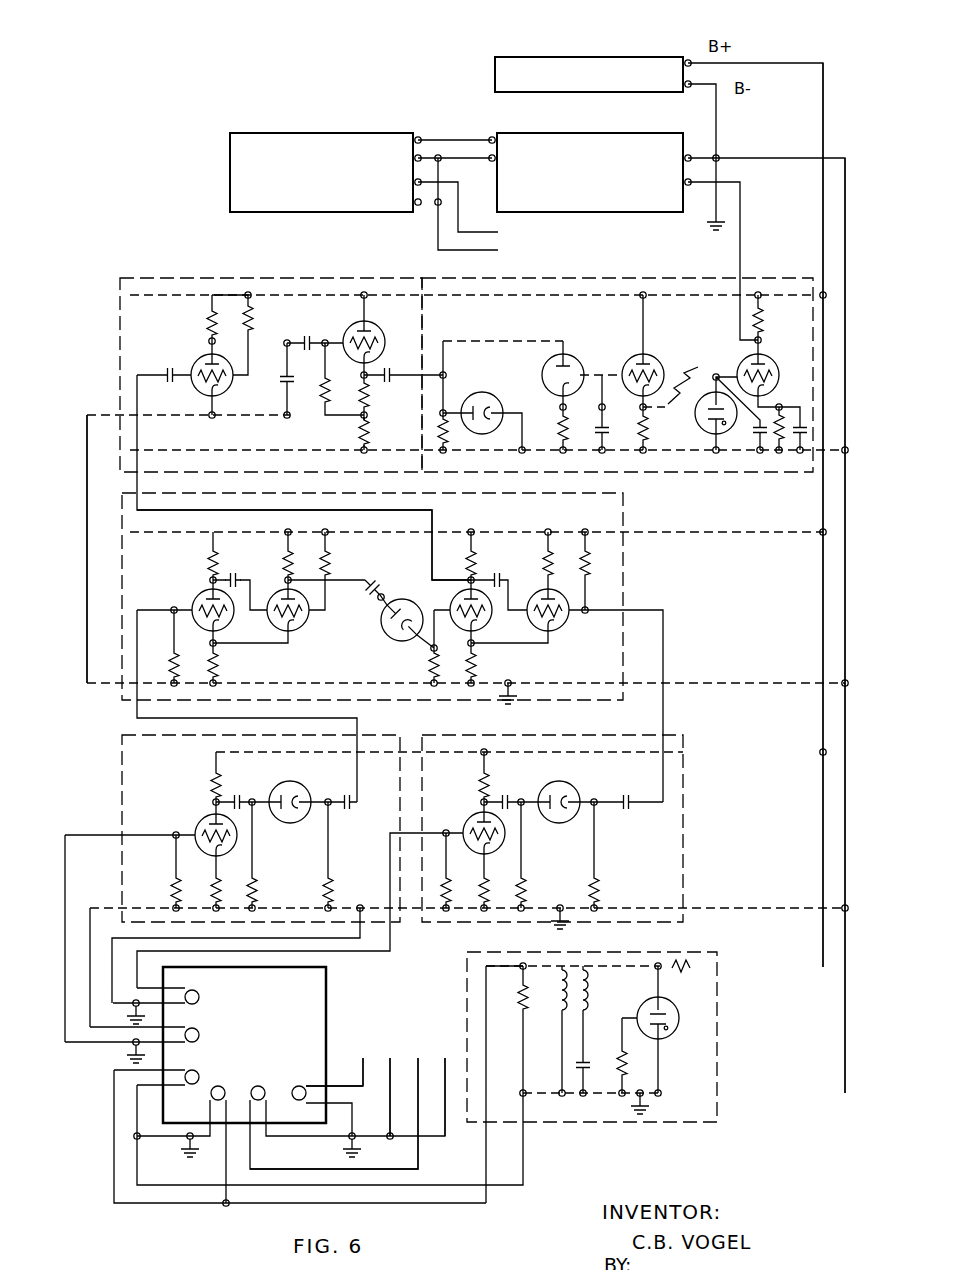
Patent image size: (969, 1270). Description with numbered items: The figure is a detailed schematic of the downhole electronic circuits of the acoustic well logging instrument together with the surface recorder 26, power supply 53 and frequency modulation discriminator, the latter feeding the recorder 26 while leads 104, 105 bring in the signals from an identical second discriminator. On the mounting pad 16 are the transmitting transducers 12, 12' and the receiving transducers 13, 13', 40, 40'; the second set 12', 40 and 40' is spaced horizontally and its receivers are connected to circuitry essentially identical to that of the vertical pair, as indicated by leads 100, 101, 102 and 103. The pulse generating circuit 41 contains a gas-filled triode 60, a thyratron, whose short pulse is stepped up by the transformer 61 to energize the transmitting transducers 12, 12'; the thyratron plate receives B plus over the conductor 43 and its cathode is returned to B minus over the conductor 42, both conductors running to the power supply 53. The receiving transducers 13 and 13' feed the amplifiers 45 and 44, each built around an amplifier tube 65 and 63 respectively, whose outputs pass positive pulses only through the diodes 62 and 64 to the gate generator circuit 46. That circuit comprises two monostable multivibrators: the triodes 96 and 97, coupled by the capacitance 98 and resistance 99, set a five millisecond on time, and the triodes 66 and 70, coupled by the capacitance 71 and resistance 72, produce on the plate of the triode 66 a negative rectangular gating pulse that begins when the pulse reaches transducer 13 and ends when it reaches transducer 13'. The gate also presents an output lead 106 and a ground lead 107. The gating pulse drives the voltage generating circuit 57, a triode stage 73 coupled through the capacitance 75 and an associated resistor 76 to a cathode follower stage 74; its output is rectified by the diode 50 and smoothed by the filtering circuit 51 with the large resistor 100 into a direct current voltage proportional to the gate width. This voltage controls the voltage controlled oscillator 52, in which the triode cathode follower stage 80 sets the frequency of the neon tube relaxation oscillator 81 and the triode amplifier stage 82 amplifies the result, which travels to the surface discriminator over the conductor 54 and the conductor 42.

The recorder 26 is at (297, 132).
The power supply 53 is at (495, 74).
The conductor 54 is at (740, 200).
The lead 104 is at (498, 232).
The lead 105 is at (498, 250).
The voltage generating circuit 57 is at (223, 276).
The voltage controlled oscillator 52 is at (646, 276).
The triode stage 73 is at (196, 362).
The cathode follower stage 74 is at (377, 329).
The capacitance 75 is at (280, 384).
The resistor 76 is at (320, 398).
The rectifying diode 50 is at (579, 359).
The resistor / lead 100 is at (552, 418).
The filtering circuit 51 is at (607, 422).
The triode cathode follower stage 80 is at (657, 359).
The neon tube relaxation oscillator 81 is at (700, 415).
The triode amplifier stage 82 is at (772, 359).
The conductor 43 is at (822, 568).
The conductor 42 is at (822, 606).
The gate generator circuit 46 is at (625, 563).
The output lead 106 is at (436, 514).
The ground lead 107 is at (84, 600).
The triode 96 is at (190, 598).
The triode 97 is at (300, 628).
The capacitance 98 is at (244, 570).
The resistance 99 is at (334, 557).
The triode 66 is at (455, 597).
The capacitance 71 is at (505, 570).
The resistance 72 is at (590, 570).
The triode 70 is at (562, 628).
The amplifier 45 is at (120, 780).
The amplifier 44 is at (688, 816).
The amplifier tube 65 is at (200, 819).
The diode 62 is at (283, 823).
The amplifier tube 63 is at (472, 818).
The diode 64 is at (552, 823).
The mounting pad 16 is at (326, 975).
The receiving transducer 13' is at (213, 992).
The receiving transducer 13 is at (212, 1025).
The transmitting transducer 12 is at (212, 1064).
The transmitting transducer 12' is at (233, 1083).
The receiving transducer 40 is at (270, 1083).
The receiving transducer 40' is at (310, 1083).
The lead 101 is at (391, 1057).
The lead 102 is at (419, 1057).
The lead 103 is at (446, 1057).
The pulse generating circuit 41 is at (720, 1046).
The transformer 61 is at (560, 1016).
The gas-filled triode 60 is at (672, 1036).